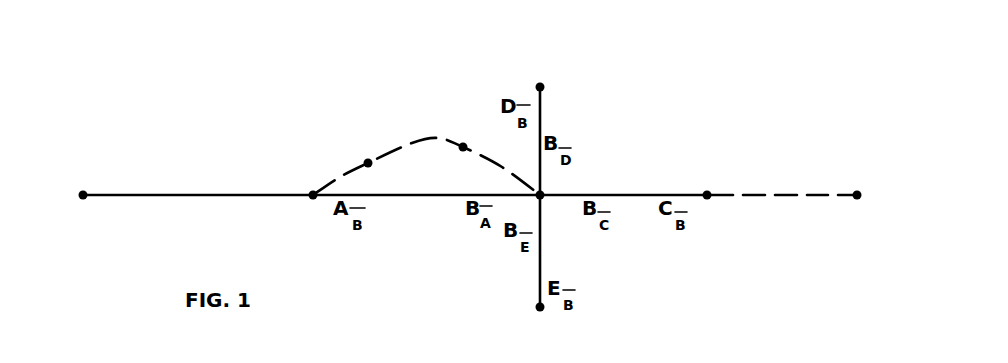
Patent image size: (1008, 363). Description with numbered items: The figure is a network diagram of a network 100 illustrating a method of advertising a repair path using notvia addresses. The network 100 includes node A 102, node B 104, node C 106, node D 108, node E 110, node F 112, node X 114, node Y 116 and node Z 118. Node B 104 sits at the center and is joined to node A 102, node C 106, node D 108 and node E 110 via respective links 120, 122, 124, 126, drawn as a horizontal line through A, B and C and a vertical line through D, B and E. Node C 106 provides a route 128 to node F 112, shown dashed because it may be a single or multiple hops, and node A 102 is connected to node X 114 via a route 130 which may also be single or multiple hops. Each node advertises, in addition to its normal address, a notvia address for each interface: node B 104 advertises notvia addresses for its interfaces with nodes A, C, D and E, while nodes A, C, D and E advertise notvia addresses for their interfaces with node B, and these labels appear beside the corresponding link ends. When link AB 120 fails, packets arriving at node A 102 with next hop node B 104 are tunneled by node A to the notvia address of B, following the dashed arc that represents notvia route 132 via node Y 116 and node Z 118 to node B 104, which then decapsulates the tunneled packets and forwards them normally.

The network 100 is at (203, 94).
The node A 102 is at (313, 193).
The node B 104 is at (542, 193).
The node C 106 is at (707, 192).
The node D 108 is at (534, 88).
The node E 110 is at (538, 312).
The node F 112 is at (913, 172).
The node X 114 is at (85, 193).
The node Y 116 is at (371, 159).
The node Z 118 is at (463, 144).
The link AB 120 is at (421, 197).
The link BC 122 is at (682, 193).
The link BD 124 is at (541, 120).
The link BE 126 is at (537, 278).
The route to node F 128 is at (780, 193).
The route to node X 130 is at (200, 194).
The notvia route 132 is at (450, 139).